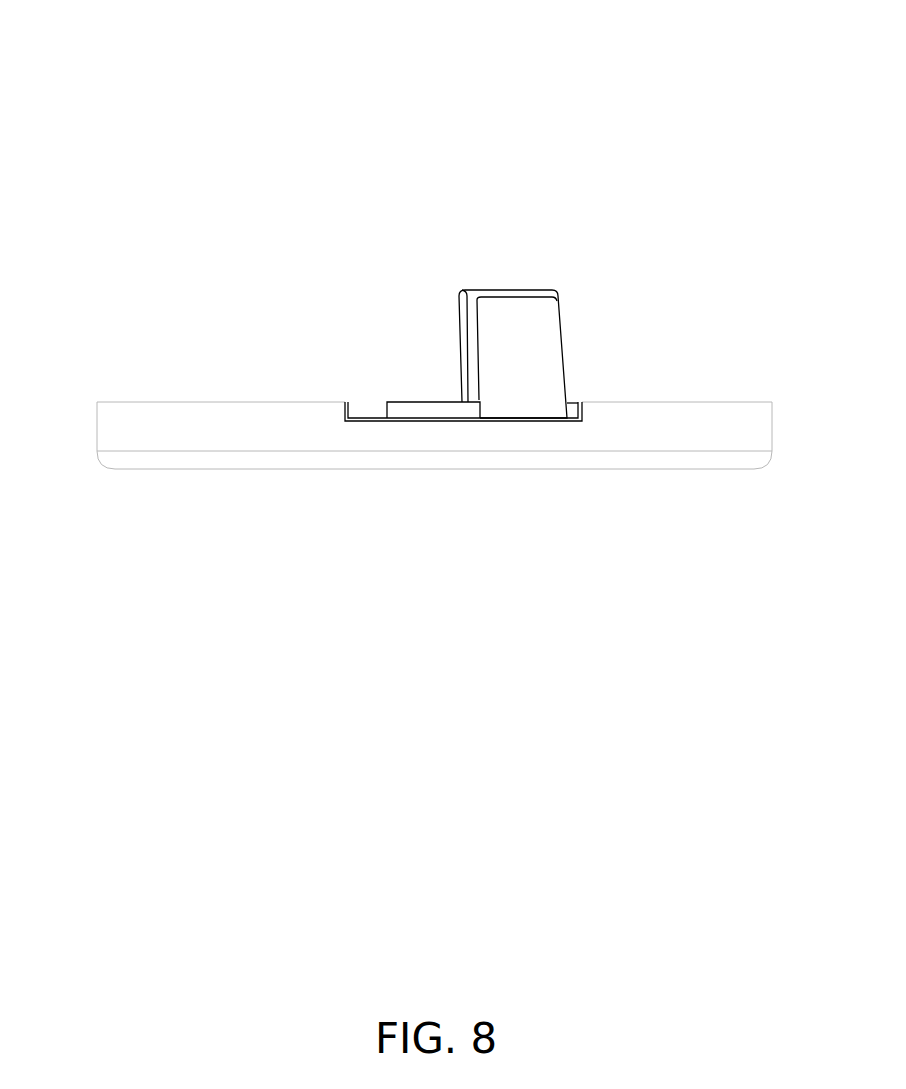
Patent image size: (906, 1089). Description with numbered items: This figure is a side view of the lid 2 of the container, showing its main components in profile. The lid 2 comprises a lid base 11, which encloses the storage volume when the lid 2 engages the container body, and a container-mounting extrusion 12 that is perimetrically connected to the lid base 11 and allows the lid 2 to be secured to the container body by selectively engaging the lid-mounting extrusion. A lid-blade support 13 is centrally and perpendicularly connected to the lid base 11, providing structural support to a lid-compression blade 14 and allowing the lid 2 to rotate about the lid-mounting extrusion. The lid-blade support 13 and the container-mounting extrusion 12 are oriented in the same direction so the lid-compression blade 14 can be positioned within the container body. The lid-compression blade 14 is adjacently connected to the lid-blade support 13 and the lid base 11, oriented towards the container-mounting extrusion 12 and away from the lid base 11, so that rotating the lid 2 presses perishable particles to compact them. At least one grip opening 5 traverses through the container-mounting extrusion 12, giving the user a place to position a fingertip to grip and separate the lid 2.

The lid 2 is at (268, 60).
The at least one grip opening 5 is at (371, 409).
The lid base 11 is at (548, 462).
The container-mounting extrusion 12 is at (110, 432).
The lid-blade support 13 is at (410, 412).
The lid-compression blade 14 is at (540, 325).